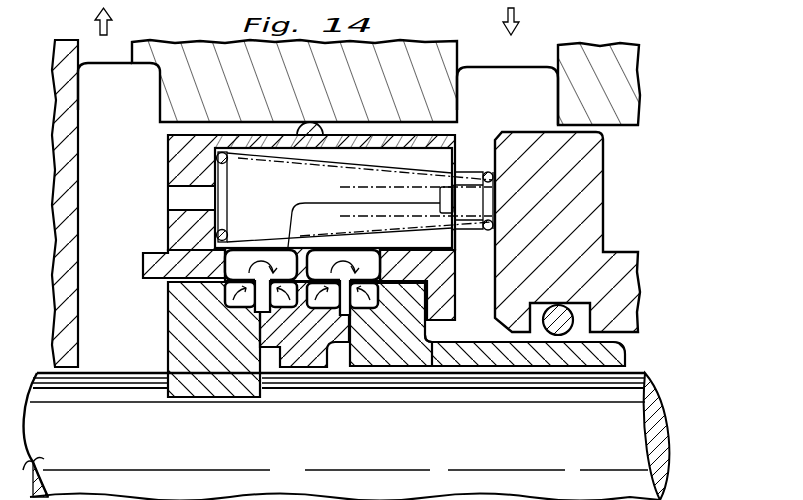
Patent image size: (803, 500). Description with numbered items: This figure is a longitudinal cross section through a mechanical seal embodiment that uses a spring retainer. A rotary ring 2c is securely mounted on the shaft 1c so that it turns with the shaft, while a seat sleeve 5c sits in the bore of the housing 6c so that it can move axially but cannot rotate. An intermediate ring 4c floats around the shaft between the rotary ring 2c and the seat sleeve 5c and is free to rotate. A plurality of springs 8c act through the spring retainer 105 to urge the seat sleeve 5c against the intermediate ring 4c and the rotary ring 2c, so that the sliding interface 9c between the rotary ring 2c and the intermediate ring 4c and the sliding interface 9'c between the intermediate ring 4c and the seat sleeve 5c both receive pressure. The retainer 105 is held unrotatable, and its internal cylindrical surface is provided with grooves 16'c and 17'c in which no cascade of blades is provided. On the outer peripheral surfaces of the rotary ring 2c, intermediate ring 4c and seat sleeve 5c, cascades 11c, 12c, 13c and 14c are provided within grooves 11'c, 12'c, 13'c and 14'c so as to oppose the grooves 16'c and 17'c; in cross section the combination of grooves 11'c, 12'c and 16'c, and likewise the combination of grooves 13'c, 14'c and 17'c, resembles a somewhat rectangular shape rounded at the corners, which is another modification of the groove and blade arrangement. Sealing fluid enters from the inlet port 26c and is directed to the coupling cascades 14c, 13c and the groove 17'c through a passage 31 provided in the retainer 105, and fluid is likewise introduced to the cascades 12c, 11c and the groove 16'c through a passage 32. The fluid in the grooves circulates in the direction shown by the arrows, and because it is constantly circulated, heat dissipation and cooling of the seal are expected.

The shaft 1c is at (67, 268).
The rotary ring 2c is at (188, 384).
The intermediate ring 4c is at (318, 345).
The seat sleeve 5c is at (440, 362).
The housing 6c is at (292, 90).
The springs 8c is at (473, 172).
The sliding interface 9c is at (254, 386).
The sliding interface 9'c is at (391, 361).
The cascade 11c is at (260, 318).
The groove 11'c is at (190, 282).
The cascade 12c is at (339, 425).
The groove 12'c is at (280, 361).
The cascade 13c is at (344, 312).
The groove 13'c is at (343, 345).
The cascade 14c is at (447, 282).
The groove 14'c is at (405, 377).
The groove 16'c is at (160, 239).
The groove 17'c is at (370, 212).
The inlet port 26c is at (537, 45).
The passage 31 is at (463, 241).
The passage 32 is at (290, 236).
The spring retainer 105 is at (172, 164).